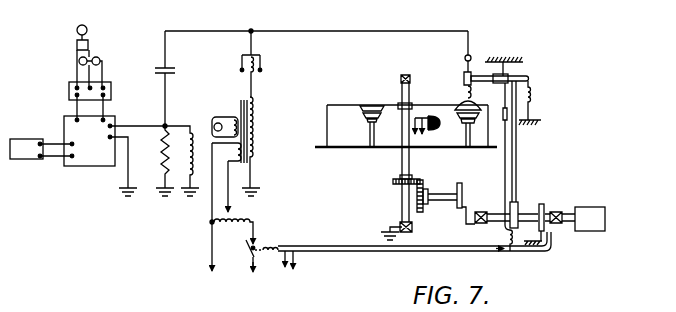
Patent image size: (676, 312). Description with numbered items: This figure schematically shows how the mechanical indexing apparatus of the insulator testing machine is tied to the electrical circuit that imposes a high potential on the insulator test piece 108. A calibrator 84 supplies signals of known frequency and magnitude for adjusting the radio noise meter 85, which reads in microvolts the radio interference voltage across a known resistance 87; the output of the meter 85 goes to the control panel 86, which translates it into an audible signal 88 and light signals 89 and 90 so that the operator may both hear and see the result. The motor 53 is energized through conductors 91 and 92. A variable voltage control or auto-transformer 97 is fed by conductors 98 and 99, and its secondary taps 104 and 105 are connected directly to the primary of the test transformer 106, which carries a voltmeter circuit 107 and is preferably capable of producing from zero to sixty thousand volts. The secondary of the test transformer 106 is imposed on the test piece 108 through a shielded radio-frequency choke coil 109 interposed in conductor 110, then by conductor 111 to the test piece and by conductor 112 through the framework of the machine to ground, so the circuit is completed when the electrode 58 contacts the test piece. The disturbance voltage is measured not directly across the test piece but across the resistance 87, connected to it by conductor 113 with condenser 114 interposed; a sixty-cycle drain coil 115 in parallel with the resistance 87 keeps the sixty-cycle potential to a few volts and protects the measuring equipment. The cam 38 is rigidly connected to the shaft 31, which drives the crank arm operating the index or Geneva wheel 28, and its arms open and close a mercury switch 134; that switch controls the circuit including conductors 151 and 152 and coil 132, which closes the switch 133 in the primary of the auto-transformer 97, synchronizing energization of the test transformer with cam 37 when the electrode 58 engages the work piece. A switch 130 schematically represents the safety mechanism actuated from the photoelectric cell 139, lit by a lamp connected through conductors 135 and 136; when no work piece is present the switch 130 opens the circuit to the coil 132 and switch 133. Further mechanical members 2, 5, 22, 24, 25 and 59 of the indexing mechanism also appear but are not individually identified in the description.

The shaft column 2 is at (410, 166).
The platform 5 is at (330, 149).
The gear 22 is at (390, 181).
The bevel gear 24 is at (425, 188).
The shaft 25 is at (440, 196).
The Geneva wheel 28 is at (463, 191).
The shaft 31 is at (492, 213).
The cam 37 is at (518, 206).
The cam wheel 38 is at (544, 206).
The motor 53 is at (592, 210).
The electrode 58 is at (456, 100).
The conductor 59 is at (518, 154).
The calibrator 84 is at (21, 160).
The radio noise meter 85 is at (90, 166).
The control panel 86 is at (68, 90).
The resistance 87 is at (161, 162).
The audible signal 88 is at (87, 27).
The light signal 89 is at (100, 58).
The light signal 90 is at (79, 61).
The conductor 91 is at (283, 262).
The conductor 92 is at (297, 257).
The auto-transformer 97 is at (216, 227).
The conductor 98 is at (254, 274).
The conductor 99 is at (210, 259).
The secondary tap 104 is at (211, 207).
The secondary tap 105 is at (240, 212).
The test transformer 106 is at (259, 128).
The voltmeter circuit 107 is at (224, 116).
The insulator test piece 108 is at (366, 108).
The radio-frequency choke coil 109 is at (265, 64).
The conductor 110 is at (382, 31).
The conductor 111 is at (470, 49).
The conductor 112 is at (390, 227).
The conductor 113 is at (192, 31).
The condenser 114 is at (177, 71).
The drain coil 115 is at (194, 134).
The switch 130 is at (506, 235).
The coil 132 is at (262, 246).
The switch 133 is at (250, 256).
The mercury switch 134 is at (543, 239).
The conductor 135 is at (418, 117).
The conductor 136 is at (438, 129).
The photoelectric cell 139 is at (504, 110).
The conductor 151 is at (340, 245).
The conductor 152 is at (357, 252).